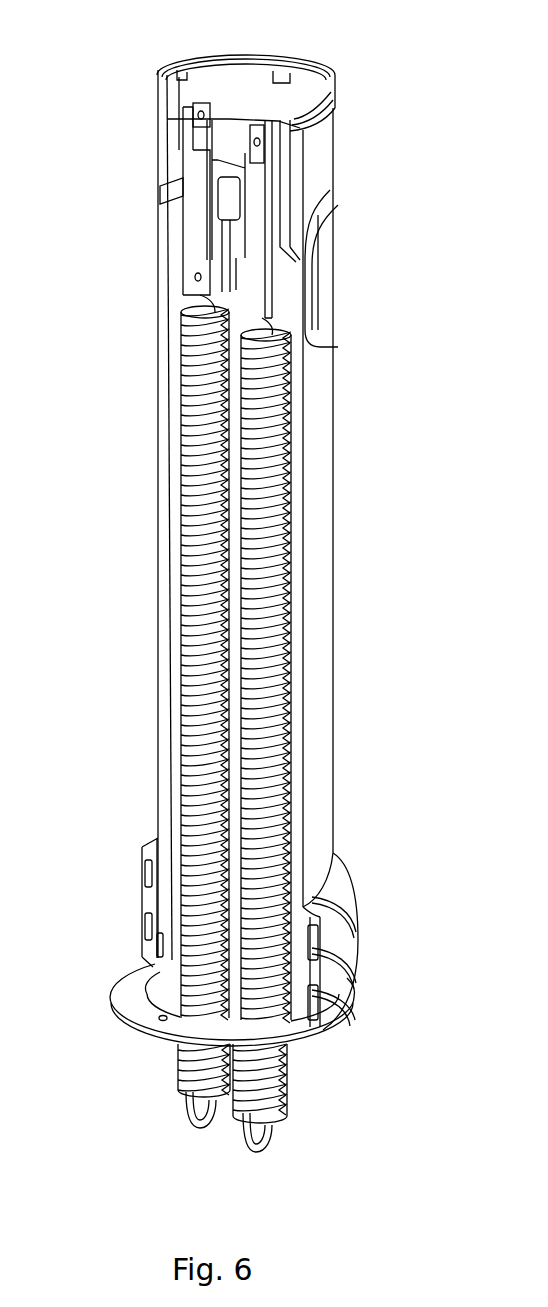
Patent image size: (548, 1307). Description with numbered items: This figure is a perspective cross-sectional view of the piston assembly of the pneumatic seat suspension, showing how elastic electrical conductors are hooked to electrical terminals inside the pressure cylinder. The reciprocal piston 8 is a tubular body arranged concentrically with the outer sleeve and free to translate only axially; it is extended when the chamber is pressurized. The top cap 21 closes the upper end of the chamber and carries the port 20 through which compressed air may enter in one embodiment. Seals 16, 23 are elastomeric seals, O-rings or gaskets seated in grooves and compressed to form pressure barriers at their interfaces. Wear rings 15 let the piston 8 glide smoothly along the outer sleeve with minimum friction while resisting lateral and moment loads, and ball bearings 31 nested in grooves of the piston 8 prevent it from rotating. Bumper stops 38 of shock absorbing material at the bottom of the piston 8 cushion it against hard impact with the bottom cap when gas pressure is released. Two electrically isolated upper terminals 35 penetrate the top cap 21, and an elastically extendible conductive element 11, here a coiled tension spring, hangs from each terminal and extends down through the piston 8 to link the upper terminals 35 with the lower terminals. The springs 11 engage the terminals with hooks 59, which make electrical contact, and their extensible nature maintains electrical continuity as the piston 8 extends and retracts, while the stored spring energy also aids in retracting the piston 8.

The reciprocal piston 8 is at (335, 578).
The elastically extendible conductive element 11 is at (200, 693).
The wear rings 15 is at (357, 913).
The seal 16 is at (150, 898).
The port 20 is at (233, 165).
The top cap 21 is at (177, 163).
The seal 23 is at (167, 182).
The ball bearings 31 is at (165, 958).
The upper terminals 35 is at (197, 118).
The bumper stops 38 is at (143, 1027).
The hooks 59 is at (240, 1137).